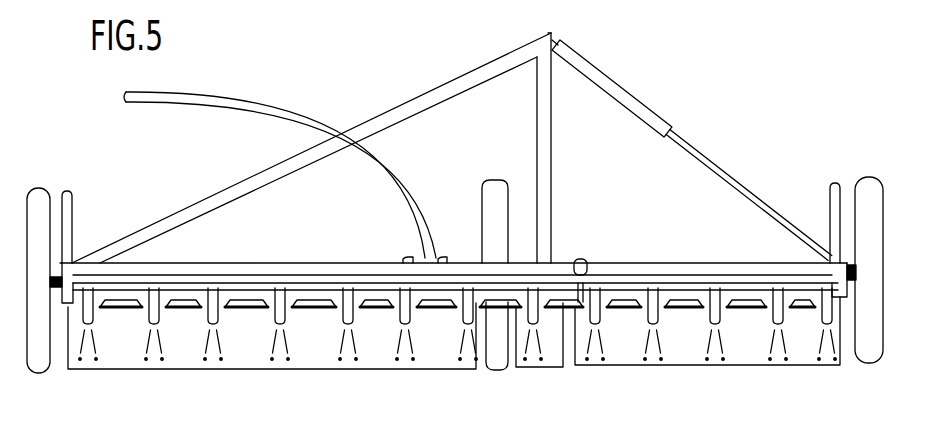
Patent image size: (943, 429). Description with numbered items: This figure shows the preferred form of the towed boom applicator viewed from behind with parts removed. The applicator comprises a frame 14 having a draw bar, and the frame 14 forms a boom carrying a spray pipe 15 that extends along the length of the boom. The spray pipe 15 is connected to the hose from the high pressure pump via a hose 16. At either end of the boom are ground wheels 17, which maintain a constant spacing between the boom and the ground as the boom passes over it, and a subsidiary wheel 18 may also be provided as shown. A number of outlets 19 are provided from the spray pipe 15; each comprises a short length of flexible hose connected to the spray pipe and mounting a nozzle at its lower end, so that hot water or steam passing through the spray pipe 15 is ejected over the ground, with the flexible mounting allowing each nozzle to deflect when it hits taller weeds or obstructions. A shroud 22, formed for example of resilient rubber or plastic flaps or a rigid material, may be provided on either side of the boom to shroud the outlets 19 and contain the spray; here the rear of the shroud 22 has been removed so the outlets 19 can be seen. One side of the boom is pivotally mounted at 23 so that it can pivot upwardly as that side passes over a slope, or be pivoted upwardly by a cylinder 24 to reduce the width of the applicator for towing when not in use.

The frame 14 is at (545, 125).
The spray pipe 15 is at (267, 280).
The hose 16 is at (255, 103).
The ground wheels 17 is at (40, 250).
The subsidiary wheel 18 is at (493, 345).
The outlets 19 is at (150, 316).
The shroud 22 is at (692, 335).
The pivot mounting 23 is at (577, 262).
The cylinder 24 is at (618, 97).